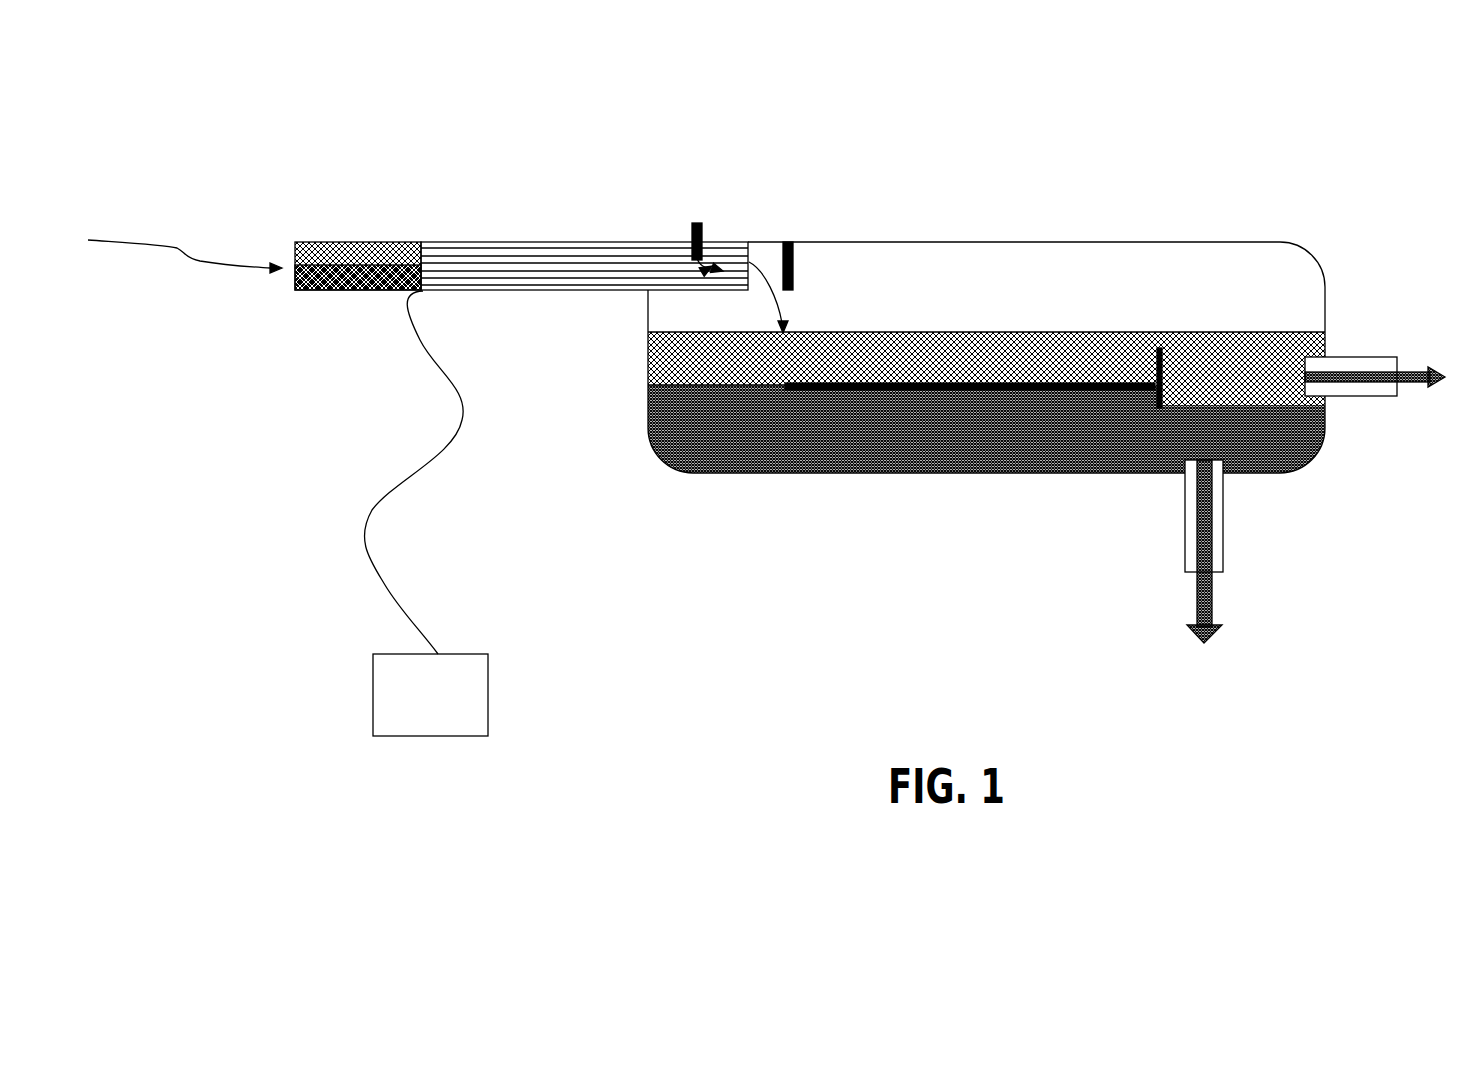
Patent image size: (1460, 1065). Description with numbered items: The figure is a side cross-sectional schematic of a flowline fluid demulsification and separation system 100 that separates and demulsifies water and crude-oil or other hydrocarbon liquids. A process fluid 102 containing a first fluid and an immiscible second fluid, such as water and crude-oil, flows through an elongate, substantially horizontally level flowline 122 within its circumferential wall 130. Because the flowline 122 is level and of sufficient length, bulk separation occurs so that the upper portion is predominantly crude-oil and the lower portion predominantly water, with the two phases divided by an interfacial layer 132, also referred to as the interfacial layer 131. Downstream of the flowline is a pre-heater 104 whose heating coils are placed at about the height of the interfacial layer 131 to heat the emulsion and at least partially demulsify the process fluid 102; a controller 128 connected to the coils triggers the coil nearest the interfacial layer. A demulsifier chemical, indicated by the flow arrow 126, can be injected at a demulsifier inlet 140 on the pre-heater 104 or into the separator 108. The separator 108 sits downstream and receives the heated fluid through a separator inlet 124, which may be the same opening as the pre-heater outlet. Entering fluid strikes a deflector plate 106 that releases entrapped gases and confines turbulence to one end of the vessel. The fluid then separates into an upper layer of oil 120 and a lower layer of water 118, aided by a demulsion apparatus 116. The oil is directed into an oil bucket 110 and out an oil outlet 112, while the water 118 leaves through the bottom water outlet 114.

The flowline fluid demulsification and separation system 100 is at (596, 106).
The process fluid 102 is at (177, 248).
The pre-heater 104 is at (572, 242).
The deflector plate 106 is at (788, 242).
The separator 108 is at (1097, 242).
The oil bucket 110 is at (1245, 322).
The oil outlet 112 is at (1355, 357).
The bottom water outlet 114 is at (1185, 533).
The demulsion apparatus 116 is at (948, 395).
The lower layer of water 118 is at (648, 413).
The upper layer of oil 120 is at (647, 357).
The flowline 122 is at (362, 290).
The separator inlet 124 is at (730, 242).
The flow arrow 126 is at (703, 271).
The controller 128 is at (488, 676).
The circumferential wall 130 is at (468, 242).
The interfacial layer 131 is at (335, 265).
The interfacial layer 132 is at (715, 388).
The demulsifier inlet 140 is at (697, 223).